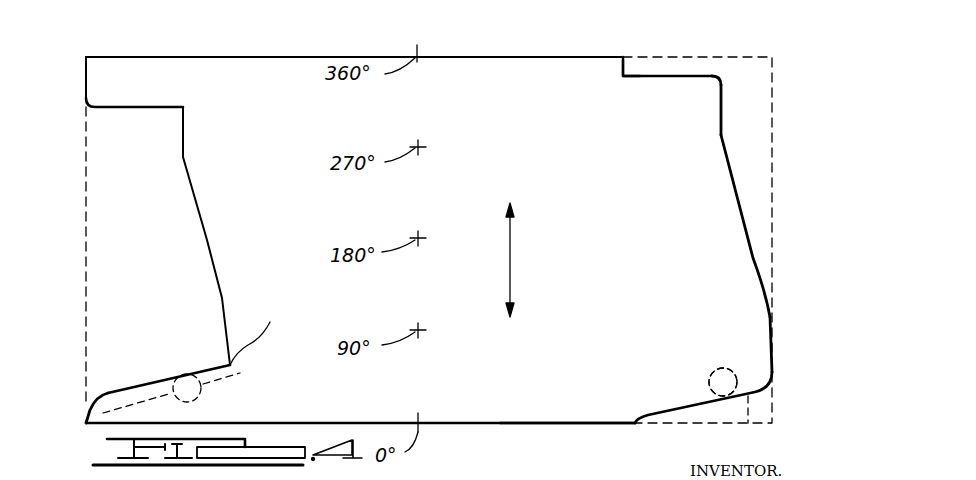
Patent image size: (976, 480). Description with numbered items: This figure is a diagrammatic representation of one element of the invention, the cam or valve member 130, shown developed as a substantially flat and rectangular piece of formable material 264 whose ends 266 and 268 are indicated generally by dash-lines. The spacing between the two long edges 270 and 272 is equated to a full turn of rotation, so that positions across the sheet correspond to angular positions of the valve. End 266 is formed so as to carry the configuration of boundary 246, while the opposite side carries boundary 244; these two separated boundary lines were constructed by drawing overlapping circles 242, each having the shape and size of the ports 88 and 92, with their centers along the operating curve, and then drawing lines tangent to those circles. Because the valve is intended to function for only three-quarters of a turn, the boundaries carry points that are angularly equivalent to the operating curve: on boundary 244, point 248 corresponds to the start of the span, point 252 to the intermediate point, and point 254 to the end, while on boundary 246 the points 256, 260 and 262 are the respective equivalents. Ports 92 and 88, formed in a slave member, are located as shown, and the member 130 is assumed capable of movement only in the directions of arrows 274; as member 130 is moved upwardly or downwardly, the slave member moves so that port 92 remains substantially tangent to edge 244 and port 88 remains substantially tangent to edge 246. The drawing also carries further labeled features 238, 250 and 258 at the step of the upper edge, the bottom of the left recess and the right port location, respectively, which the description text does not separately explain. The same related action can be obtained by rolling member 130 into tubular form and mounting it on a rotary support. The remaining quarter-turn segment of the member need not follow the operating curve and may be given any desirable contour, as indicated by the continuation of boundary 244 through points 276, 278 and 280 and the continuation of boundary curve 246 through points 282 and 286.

The port 88 is at (717, 371).
The port 92 is at (220, 385).
The cam or valve member 130 is at (568, 425).
The step shoulder 238 is at (622, 58).
The circle 242 is at (757, 437).
The boundary line 244 is at (221, 305).
The boundary line 246 is at (752, 260).
The point 248 is at (86, 424).
The slot bottom face 250 is at (183, 376).
The point 252 is at (275, 343).
The point 254 is at (184, 157).
The point 256 is at (635, 421).
The pin 258 is at (709, 383).
The point 260 is at (772, 362).
The point 262 is at (720, 136).
The piece of formable material 264 is at (336, 425).
The end 266 is at (87, 342).
The end 268 is at (772, 172).
The edge 270 is at (487, 423).
The edge 272 is at (275, 42).
The arrows 274 is at (512, 272).
The point 276 is at (184, 108).
The point 278 is at (108, 109).
The point 280 is at (85, 56).
The point 282 is at (724, 79).
The point 286 is at (625, 74).